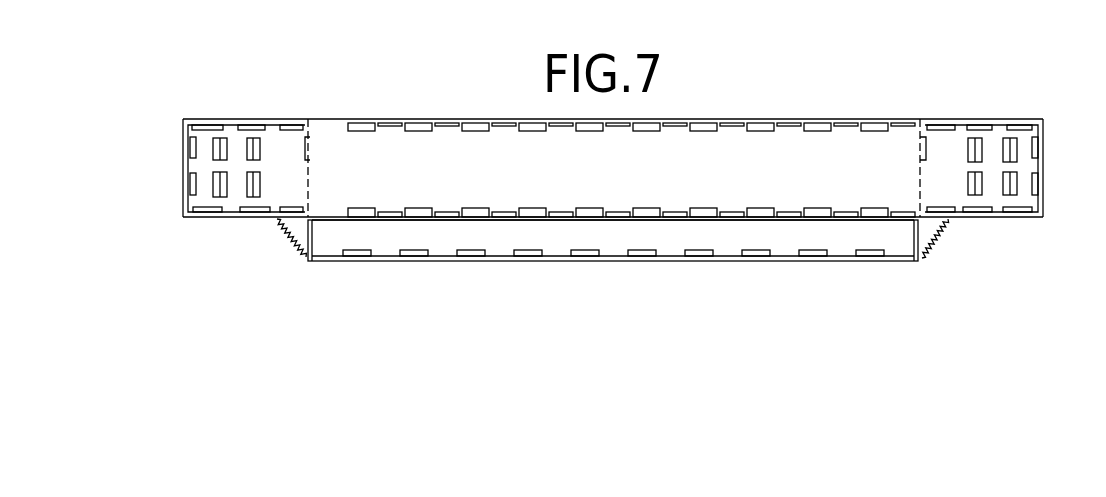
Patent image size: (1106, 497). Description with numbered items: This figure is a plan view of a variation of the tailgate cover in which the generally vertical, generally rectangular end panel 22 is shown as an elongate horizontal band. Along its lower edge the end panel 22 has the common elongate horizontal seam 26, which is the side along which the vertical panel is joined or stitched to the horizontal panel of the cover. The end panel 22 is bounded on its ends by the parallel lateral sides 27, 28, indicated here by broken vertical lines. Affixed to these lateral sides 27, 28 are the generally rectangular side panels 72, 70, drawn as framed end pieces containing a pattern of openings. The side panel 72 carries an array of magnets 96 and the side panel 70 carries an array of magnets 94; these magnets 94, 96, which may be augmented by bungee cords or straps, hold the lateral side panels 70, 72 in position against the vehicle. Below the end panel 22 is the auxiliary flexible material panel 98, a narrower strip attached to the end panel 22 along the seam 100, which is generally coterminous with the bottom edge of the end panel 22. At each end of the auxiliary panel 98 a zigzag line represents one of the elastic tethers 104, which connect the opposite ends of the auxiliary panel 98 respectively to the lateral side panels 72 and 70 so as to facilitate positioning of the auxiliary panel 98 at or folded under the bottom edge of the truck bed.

The end panel 22 is at (613, 168).
The seam 26 is at (438, 220).
The lateral side 27 is at (307, 177).
The lateral side 28 is at (941, 168).
The side panel 70 is at (988, 160).
The side panel 72 is at (246, 172).
The magnets 94 is at (1038, 147).
The magnets 96 is at (293, 125).
The auxiliary flexible material panel 98 is at (613, 265).
The seam 100 is at (733, 210).
The elastic tethers 104 is at (942, 233).